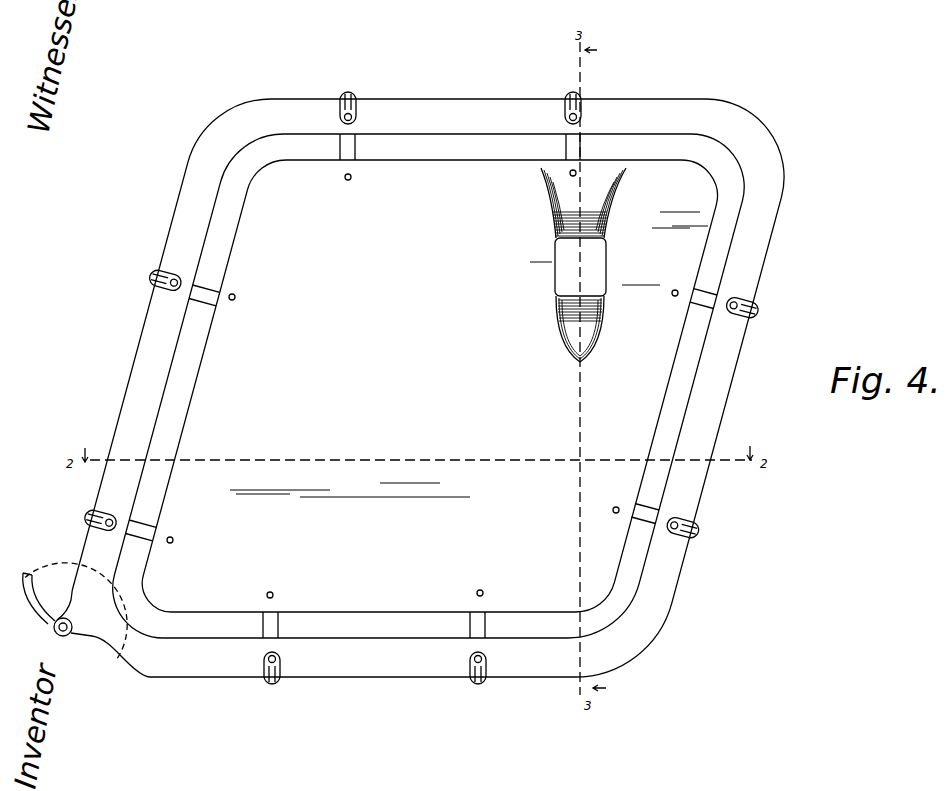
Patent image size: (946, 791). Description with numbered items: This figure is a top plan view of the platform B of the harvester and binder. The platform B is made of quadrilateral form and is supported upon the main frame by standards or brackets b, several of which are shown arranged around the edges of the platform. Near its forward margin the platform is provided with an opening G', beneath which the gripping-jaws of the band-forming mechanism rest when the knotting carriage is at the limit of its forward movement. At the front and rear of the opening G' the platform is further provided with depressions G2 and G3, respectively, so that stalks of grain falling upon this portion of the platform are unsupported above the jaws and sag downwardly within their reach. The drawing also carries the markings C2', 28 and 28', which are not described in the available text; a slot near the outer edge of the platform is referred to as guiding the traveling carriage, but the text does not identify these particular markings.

The standards or brackets b is at (470, 626).
The platform B is at (268, 358).
The opening G' is at (580, 267).
The depression G2 is at (583, 203).
The depression G3 is at (580, 329).
The frame tube C2' is at (428, 388).
The bracket lug 28 is at (122, 620).
The hook 28' is at (39, 612).